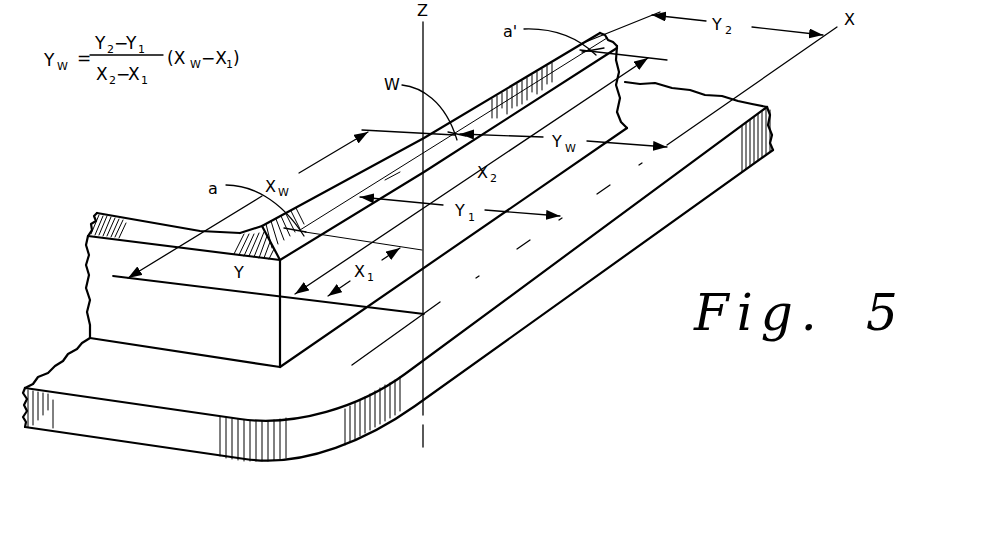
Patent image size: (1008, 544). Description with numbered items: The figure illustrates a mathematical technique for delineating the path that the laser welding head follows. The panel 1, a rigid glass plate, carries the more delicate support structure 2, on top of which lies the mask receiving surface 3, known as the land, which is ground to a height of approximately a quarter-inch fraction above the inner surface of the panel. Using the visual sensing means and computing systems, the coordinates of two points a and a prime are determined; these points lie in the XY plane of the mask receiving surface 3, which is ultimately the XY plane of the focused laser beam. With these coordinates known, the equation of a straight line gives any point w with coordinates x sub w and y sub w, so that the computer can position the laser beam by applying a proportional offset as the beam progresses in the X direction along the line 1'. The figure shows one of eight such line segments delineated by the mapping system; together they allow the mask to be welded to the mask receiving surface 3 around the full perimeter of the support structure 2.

The panel 1 is at (398, 271).
The line 1' is at (433, 200).
The support structure 2 is at (203, 315).
The mask receiving surface 3 is at (149, 233).